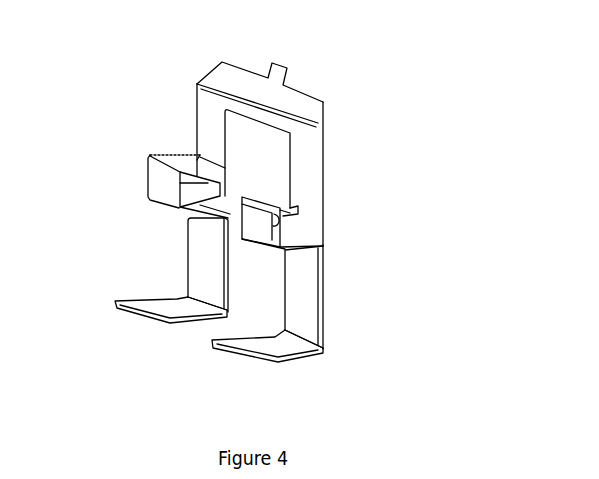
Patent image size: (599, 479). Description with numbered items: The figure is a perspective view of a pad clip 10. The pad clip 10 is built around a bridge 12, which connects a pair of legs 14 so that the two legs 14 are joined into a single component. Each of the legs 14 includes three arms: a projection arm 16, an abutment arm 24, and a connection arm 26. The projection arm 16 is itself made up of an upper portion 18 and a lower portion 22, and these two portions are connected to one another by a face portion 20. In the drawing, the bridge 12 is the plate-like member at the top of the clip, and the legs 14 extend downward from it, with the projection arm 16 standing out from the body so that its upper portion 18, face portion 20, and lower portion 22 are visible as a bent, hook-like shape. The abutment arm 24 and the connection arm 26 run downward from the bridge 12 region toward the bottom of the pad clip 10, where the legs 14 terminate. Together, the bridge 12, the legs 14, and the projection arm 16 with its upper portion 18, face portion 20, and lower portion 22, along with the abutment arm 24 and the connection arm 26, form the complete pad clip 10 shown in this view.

The pad clip 10 is at (407, 75).
The bridge 12 is at (295, 103).
The legs 14 is at (130, 335).
The projection arm 16 is at (128, 150).
The upper portion 18 is at (297, 207).
The face portion 20 is at (262, 223).
The lower portion 22 is at (273, 257).
The abutment arm 24 is at (210, 270).
The connection arm 26 is at (280, 348).